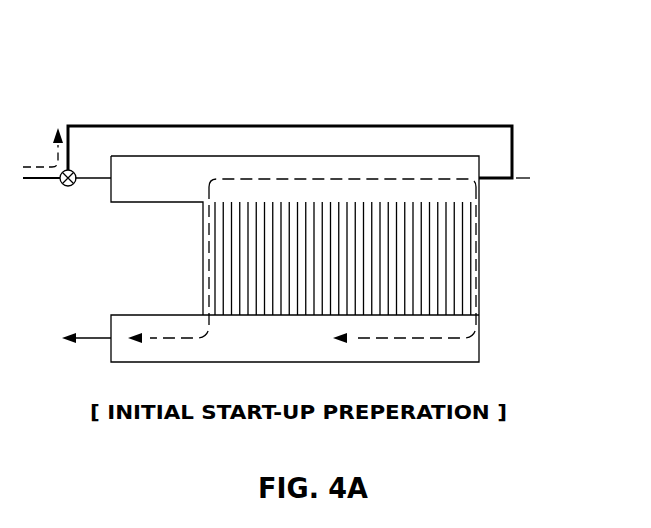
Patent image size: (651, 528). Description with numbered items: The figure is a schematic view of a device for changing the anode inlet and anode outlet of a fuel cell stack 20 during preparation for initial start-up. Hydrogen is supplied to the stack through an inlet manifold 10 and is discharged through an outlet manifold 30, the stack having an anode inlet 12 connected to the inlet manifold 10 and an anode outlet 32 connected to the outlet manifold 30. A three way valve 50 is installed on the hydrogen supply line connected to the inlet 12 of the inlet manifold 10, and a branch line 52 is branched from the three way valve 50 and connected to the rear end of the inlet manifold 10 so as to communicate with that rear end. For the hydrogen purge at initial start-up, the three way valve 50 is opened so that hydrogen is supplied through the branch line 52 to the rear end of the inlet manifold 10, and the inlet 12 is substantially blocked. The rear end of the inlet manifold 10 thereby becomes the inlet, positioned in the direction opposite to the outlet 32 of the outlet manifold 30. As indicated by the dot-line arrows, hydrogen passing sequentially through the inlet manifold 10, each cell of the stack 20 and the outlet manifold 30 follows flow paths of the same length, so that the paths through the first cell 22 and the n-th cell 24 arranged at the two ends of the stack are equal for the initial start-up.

The inlet manifold 10 is at (303, 145).
The anode inlet 12 is at (111, 163).
The fuel cell stack 20 is at (490, 280).
The first cell 22 is at (203, 243).
The n-th cell 24 is at (480, 217).
The outlet manifold 30 is at (495, 350).
The anode outlet 32 is at (110, 327).
The three way valve 50 is at (83, 152).
The branch line 52 is at (198, 126).